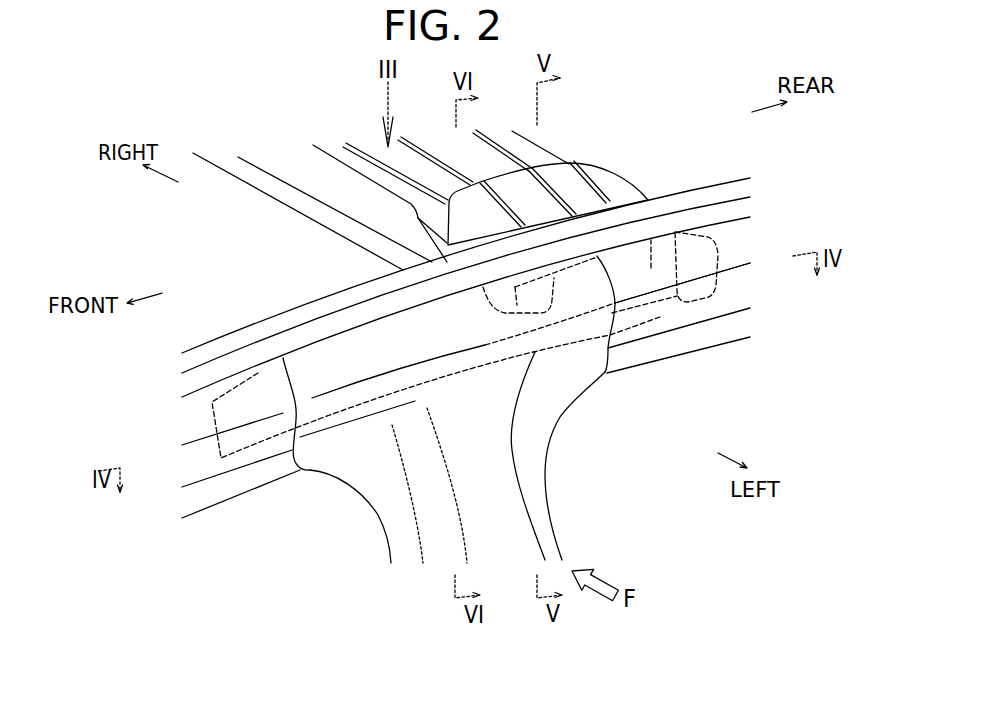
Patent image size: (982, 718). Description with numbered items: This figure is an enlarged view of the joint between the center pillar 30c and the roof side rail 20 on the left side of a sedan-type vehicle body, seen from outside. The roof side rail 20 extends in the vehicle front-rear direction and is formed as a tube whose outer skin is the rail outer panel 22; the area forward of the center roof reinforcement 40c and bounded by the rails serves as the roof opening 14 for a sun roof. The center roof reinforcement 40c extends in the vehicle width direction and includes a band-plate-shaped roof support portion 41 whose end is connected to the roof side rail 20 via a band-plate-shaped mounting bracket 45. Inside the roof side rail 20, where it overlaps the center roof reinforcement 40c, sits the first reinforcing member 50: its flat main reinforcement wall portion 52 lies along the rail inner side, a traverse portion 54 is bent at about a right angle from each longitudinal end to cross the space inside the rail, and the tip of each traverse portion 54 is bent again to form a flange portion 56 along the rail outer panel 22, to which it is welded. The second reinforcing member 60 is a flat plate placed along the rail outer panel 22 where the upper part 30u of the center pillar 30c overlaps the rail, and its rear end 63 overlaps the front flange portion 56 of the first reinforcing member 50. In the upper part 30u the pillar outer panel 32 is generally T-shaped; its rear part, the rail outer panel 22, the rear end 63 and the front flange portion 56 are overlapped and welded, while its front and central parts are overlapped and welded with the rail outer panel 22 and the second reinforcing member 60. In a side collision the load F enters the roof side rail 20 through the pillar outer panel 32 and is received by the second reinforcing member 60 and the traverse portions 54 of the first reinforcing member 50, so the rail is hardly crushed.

The roof opening 14 is at (250, 186).
The roof side rail 20 is at (724, 338).
The rail outer panel 22 is at (197, 422).
The upper part of the center pillar 30u is at (426, 454).
The center pillar 30c is at (522, 543).
The pillar outer panel 32 is at (498, 500).
The center roof reinforcement 40c is at (354, 135).
The roof support portion 41 is at (510, 160).
The mounting bracket 45 is at (577, 192).
The first reinforcing member 50 is at (659, 318).
The main reinforcement wall portion 52 is at (651, 268).
The traverse portion 54 is at (684, 305).
The flange portion 56 is at (710, 282).
The second reinforcing member 60 is at (323, 413).
The rear end of the second reinforcing member 63 is at (545, 333).